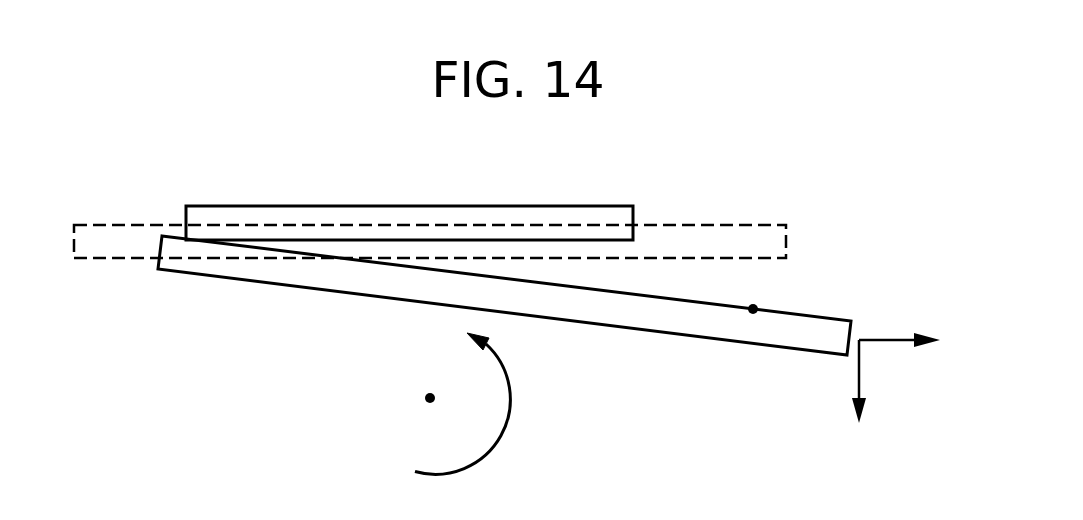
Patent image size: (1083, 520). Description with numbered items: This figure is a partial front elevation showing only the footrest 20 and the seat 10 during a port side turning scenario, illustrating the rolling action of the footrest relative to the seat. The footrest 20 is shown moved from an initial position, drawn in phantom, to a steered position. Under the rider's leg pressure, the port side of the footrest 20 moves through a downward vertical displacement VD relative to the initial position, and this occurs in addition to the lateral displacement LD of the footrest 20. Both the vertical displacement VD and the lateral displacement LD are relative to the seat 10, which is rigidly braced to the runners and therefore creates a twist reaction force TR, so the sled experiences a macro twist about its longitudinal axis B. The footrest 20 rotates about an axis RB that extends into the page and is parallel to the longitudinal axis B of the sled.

The seat 10 is at (540, 206).
The footrest 20 is at (827, 319).
The axis RB is at (752, 304).
The longitudinal axis B is at (426, 394).
The twist reaction force TR is at (497, 437).
The lateral displacement LD is at (918, 343).
The vertical displacement VD is at (862, 399).